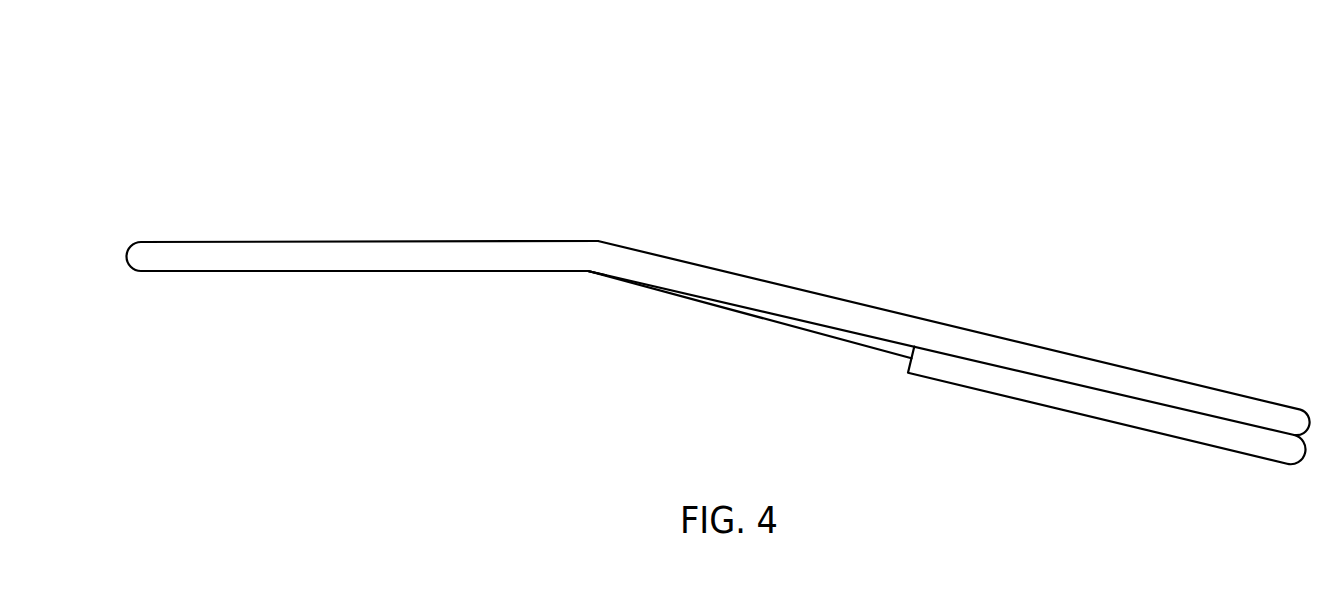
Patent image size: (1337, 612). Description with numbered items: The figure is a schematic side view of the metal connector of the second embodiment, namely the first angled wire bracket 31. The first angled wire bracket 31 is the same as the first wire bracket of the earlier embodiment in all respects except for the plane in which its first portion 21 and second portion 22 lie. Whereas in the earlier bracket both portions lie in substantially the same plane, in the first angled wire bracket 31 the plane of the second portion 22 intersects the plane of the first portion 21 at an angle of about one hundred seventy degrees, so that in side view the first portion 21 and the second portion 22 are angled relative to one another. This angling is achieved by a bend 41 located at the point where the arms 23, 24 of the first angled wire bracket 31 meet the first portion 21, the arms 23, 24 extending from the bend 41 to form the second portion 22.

The first angled wire bracket 31 is at (766, 123).
The first portion 21 is at (353, 255).
The second portion 22 is at (1032, 322).
The arm 23 is at (862, 322).
The arm 24 is at (872, 350).
The bend 41 is at (587, 273).